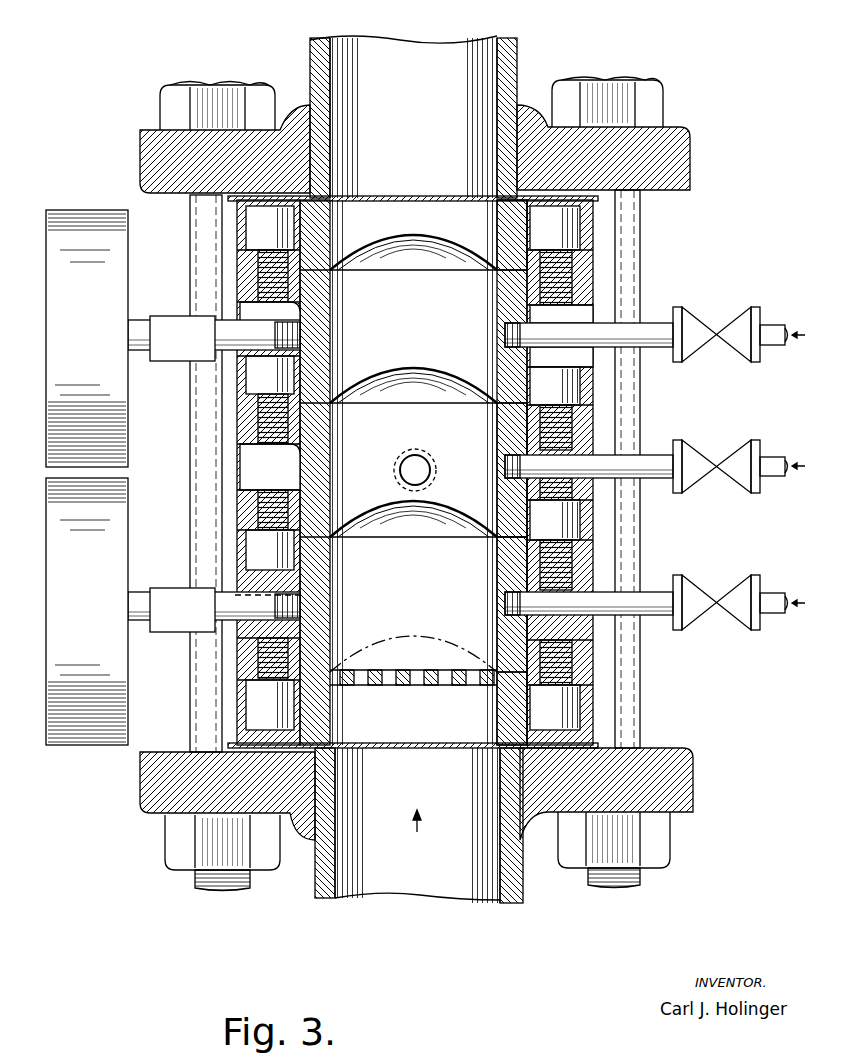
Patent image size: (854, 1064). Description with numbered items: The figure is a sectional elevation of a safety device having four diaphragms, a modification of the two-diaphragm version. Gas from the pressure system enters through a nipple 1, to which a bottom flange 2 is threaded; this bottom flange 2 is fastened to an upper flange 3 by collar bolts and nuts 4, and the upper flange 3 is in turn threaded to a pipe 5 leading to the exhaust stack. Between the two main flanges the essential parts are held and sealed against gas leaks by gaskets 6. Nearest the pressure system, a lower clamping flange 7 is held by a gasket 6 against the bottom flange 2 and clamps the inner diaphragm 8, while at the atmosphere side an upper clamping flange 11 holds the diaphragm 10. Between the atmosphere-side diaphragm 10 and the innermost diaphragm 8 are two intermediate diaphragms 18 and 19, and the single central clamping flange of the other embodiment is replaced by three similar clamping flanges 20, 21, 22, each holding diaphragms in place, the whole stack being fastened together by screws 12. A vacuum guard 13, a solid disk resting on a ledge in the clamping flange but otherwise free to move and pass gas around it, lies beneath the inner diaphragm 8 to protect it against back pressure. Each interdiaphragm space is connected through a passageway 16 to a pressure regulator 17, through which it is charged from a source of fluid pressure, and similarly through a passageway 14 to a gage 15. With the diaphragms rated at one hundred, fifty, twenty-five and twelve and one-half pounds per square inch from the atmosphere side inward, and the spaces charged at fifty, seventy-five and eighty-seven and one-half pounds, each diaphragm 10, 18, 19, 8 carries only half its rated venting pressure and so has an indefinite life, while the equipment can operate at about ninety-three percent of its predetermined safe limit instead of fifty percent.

The nipple 1 is at (523, 895).
The bottom flange 2 is at (693, 800).
The upper flange 3 is at (690, 160).
The collar bolts and nuts 4 is at (665, 95).
The pipe 5 is at (520, 55).
The gaskets 6 is at (565, 202).
The lower clamping flange 7 is at (505, 716).
The inner diaphragm 8 is at (450, 657).
The diaphragm 10 is at (448, 242).
The upper clamping flange 11 is at (500, 232).
The screws 12 is at (560, 245).
The vacuum guard 13 is at (432, 686).
The connecting passageway 14 is at (418, 455).
The pressure gage 15 is at (128, 440).
The connecting passageway 16 is at (650, 325).
The pressure regulating valve 17 is at (740, 310).
The intermediate diaphragm 18 is at (440, 372).
The intermediate diaphragm 19 is at (450, 505).
The section 20 is at (497, 300).
The section 21 is at (497, 447).
The section 22 is at (497, 572).